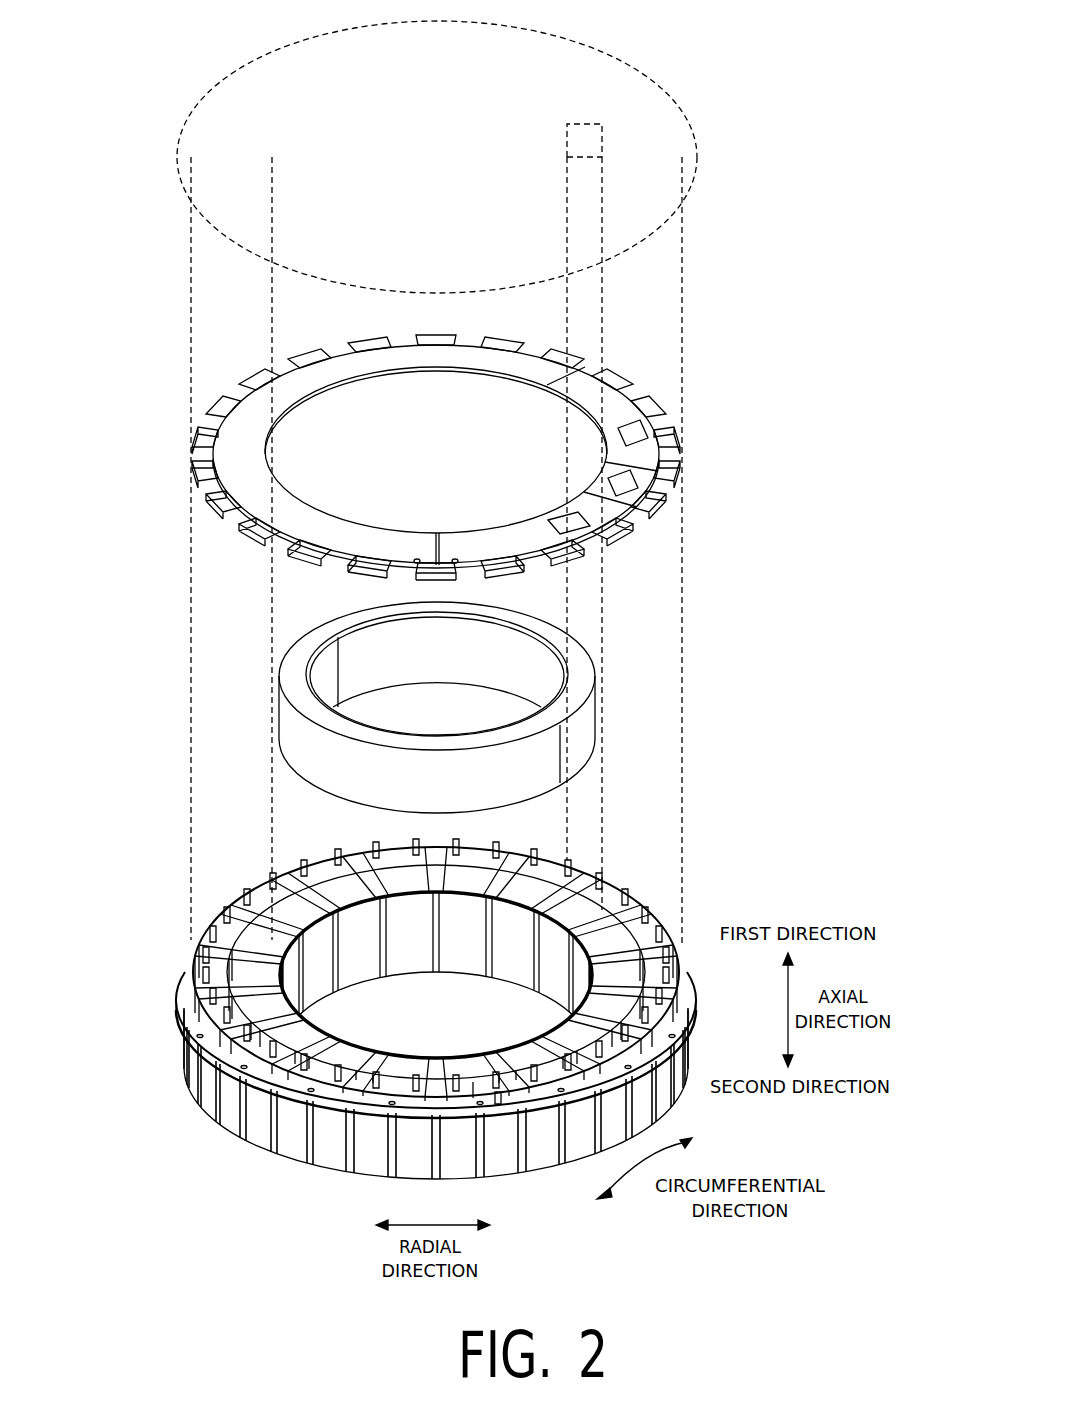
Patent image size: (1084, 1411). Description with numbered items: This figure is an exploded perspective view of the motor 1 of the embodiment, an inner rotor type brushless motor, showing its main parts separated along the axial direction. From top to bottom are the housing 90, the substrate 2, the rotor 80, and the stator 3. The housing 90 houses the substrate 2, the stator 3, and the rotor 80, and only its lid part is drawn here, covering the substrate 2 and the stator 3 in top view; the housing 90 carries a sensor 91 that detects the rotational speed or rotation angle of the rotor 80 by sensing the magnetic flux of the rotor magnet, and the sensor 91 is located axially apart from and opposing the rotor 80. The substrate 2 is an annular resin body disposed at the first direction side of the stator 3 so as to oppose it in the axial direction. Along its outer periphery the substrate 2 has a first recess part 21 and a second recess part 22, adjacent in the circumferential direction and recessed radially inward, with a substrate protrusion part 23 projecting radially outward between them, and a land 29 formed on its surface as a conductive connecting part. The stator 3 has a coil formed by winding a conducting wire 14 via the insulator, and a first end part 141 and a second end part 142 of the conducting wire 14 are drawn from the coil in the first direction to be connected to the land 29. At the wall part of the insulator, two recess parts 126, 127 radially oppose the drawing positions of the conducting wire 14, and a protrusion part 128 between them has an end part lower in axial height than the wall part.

The motor 1 is at (143, 326).
The substrate 2 is at (610, 390).
The first recess part 21 is at (416, 556).
The second recess part 22 is at (461, 556).
The substrate protrusion part 23 is at (438, 581).
The land 29 is at (432, 560).
The stator 3 is at (631, 868).
The conducting wire 14 is at (436, 965).
The first end part 141 is at (450, 1088).
The second end part 142 is at (491, 1078).
The recess part 126 is at (453, 1093).
The recess part 127 is at (499, 1104).
The protrusion part 128 is at (473, 1093).
The rotor 80 is at (585, 720).
The housing 90 is at (642, 95).
The sensor 91 is at (587, 124).